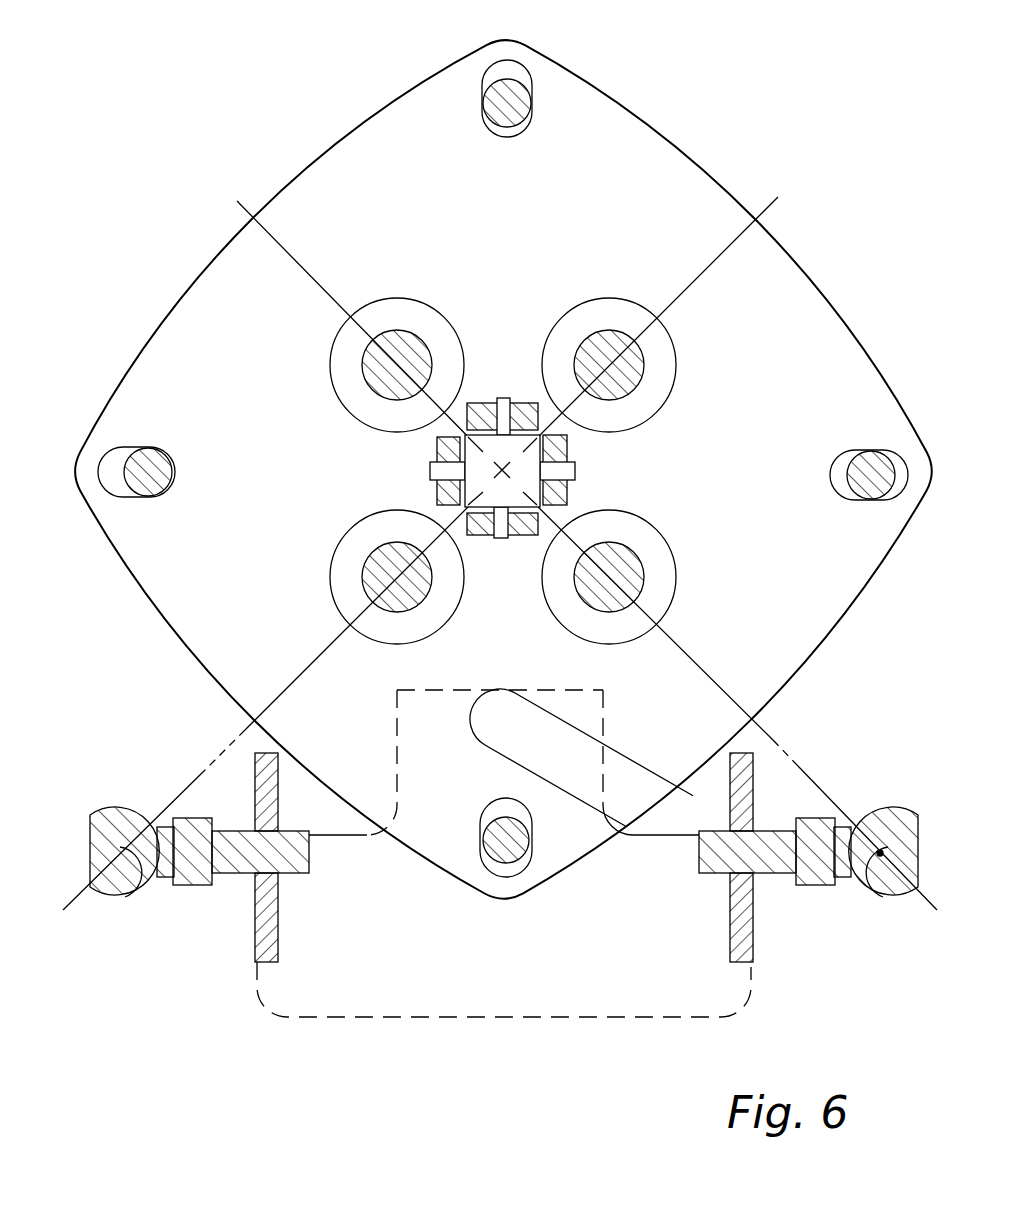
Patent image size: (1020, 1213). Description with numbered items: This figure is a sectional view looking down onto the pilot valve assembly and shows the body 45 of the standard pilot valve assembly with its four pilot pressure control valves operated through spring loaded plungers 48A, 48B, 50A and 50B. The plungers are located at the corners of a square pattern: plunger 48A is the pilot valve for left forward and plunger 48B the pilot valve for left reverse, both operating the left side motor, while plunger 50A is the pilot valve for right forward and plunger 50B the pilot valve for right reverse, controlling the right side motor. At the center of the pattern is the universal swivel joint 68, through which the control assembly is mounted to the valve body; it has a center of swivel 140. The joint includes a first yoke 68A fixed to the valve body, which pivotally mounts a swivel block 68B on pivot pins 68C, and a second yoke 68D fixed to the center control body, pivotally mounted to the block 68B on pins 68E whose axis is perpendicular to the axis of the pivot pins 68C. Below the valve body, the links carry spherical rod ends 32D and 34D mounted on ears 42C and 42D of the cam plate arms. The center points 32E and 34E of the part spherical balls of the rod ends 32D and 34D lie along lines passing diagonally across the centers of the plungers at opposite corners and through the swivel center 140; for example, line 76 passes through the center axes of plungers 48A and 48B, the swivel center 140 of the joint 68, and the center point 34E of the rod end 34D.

The body 45 is at (846, 354).
The plunger 48A is at (640, 570).
The plunger 48B is at (372, 352).
The plunger 50A is at (372, 570).
The plunger 50B is at (640, 357).
The universal swivel joint 68 is at (487, 472).
The first yoke 68A is at (467, 409).
The swivel block 68B is at (482, 404).
The pivot pins 68C is at (507, 398).
The second yoke 68D is at (437, 445).
The pins 68E is at (430, 470).
The center of swivel 140 is at (503, 538).
The line 76 is at (722, 688).
The spherical rod end 32D is at (118, 812).
The center point 32E is at (138, 887).
The spherical rod end 34D is at (877, 817).
The center point 34E is at (878, 872).
The ear 42C is at (262, 937).
The ear 42D is at (753, 920).